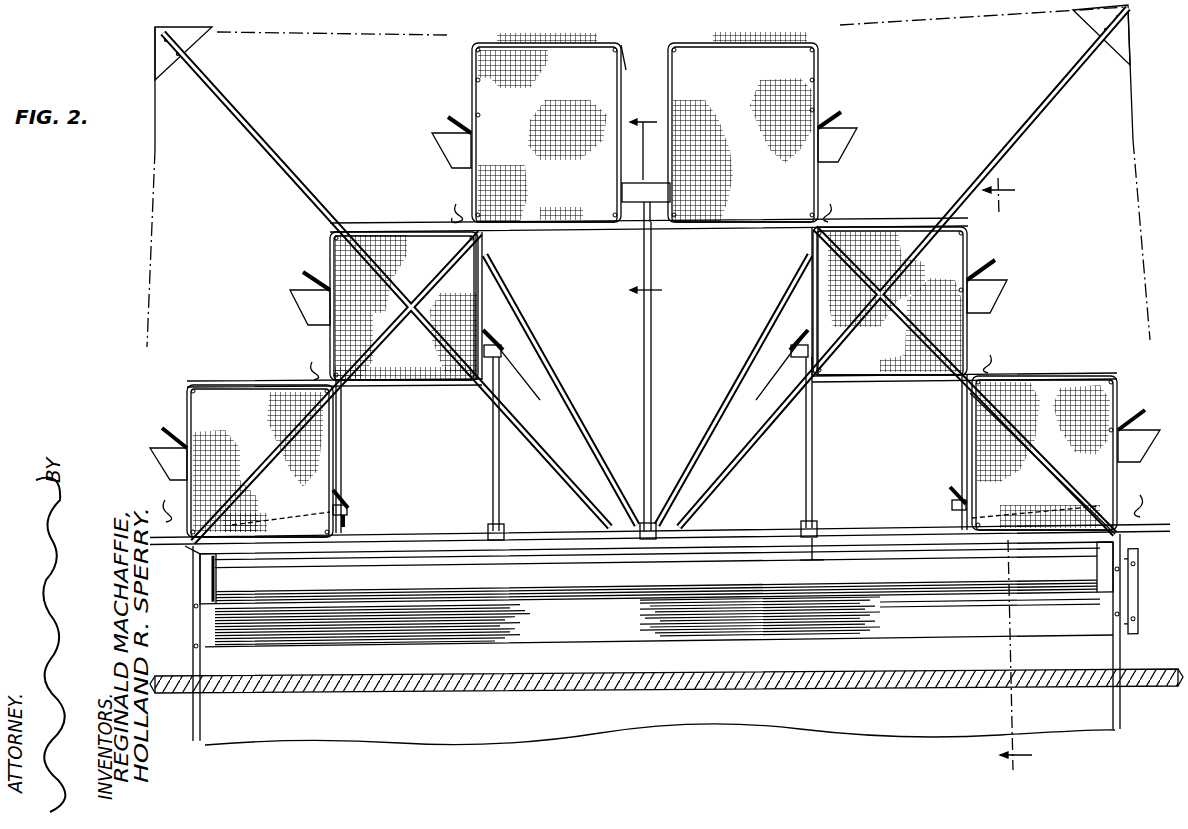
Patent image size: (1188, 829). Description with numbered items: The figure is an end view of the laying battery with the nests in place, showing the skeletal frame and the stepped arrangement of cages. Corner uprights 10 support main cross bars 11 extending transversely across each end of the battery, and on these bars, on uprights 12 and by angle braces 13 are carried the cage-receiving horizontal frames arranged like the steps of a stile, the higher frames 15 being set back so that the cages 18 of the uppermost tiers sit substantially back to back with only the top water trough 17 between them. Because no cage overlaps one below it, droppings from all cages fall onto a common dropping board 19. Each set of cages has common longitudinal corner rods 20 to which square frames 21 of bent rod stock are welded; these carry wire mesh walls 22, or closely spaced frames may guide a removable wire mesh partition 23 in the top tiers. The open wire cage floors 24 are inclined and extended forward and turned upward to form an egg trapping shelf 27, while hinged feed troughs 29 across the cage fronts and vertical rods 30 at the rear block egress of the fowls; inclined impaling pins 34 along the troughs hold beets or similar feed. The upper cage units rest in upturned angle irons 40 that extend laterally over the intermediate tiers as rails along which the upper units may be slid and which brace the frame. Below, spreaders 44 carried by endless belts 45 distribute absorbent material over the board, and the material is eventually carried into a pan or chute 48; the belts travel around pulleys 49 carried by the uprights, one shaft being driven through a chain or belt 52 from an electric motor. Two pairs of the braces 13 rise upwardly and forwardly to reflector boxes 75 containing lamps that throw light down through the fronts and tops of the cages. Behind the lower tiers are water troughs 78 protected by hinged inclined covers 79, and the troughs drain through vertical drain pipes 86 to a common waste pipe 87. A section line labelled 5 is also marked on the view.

The section line 5 is at (1010, 474).
The corner upright 10 is at (196, 664).
The main cross bar 11 is at (228, 544).
The upright 12 is at (484, 286).
The angle brace 13 is at (220, 92).
The intermediate frame 15 is at (855, 402).
The top water trough 17 is at (644, 186).
The cage 18 is at (646, 270).
The dropping board 19 is at (744, 562).
The corner rod 20 is at (822, 46).
The square frame 21 is at (628, 50).
The wire mesh wall 22 is at (696, 60).
The removable wire mesh partition 23 is at (560, 38).
The cage floor 24 is at (276, 522).
The egg trapping shelf 27 is at (456, 208).
The feed trough 29 is at (432, 150).
The vertically disposed rod 30 is at (968, 448).
The impaling pin 34 is at (452, 120).
The upturned angle iron 40 is at (400, 224).
The spreader 44 is at (538, 550).
The endless belt 45 is at (210, 600).
The pan or chute 48 is at (666, 697).
The pulley 49 is at (198, 584).
The chain or belt 52 is at (1138, 598).
The reflector box 75 is at (160, 48).
The water trough 78 is at (504, 354).
The hinged inclined cover 79 is at (500, 336).
The vertical drain pipe 86 is at (652, 270).
The common waste pipe 87 is at (812, 540).